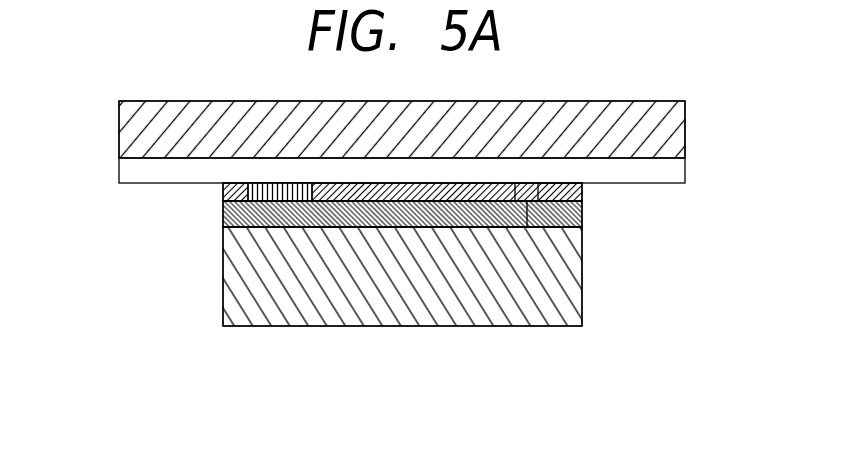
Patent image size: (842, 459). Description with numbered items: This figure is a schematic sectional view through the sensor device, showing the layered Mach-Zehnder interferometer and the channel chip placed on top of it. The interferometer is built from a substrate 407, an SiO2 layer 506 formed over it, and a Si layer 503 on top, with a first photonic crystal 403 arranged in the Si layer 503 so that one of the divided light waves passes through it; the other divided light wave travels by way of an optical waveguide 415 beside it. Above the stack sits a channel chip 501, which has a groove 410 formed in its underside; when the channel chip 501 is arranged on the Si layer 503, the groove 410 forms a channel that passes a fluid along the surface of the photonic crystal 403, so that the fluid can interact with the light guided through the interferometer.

The groove 410 is at (675, 170).
The Si layer 503 is at (582, 190).
The first photonic crystal 403 is at (263, 201).
The SiO2 layer 506 is at (582, 218).
The optical waveguide 415 is at (567, 251).
The substrate 407 is at (405, 307).
The channel chip 501 is at (130, 195).